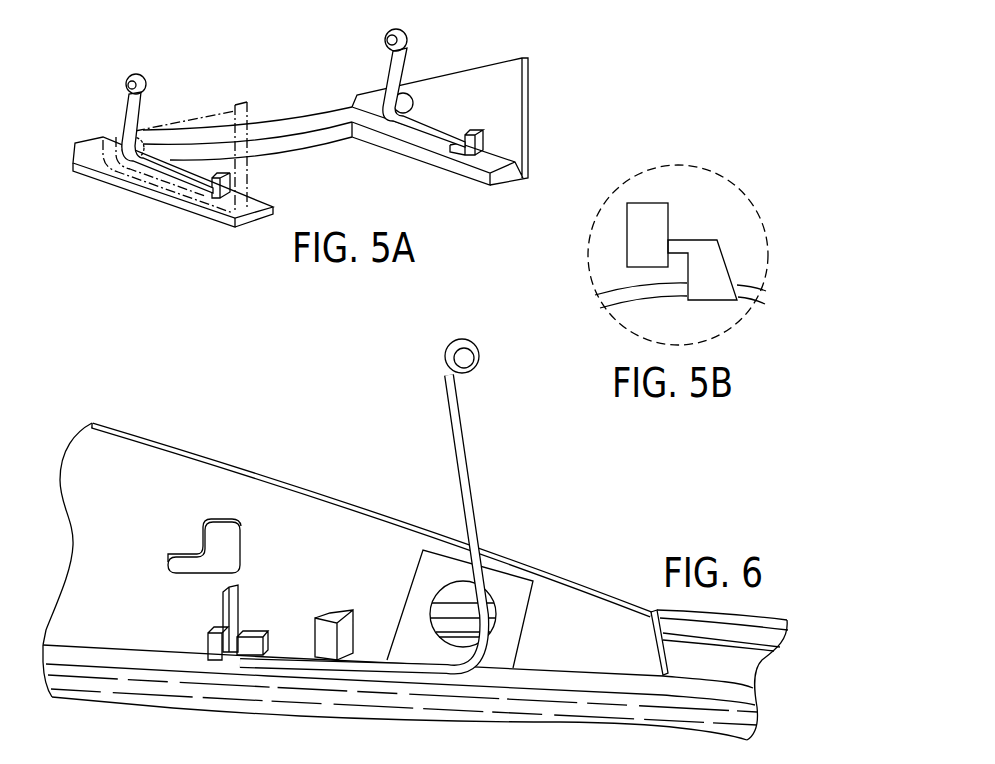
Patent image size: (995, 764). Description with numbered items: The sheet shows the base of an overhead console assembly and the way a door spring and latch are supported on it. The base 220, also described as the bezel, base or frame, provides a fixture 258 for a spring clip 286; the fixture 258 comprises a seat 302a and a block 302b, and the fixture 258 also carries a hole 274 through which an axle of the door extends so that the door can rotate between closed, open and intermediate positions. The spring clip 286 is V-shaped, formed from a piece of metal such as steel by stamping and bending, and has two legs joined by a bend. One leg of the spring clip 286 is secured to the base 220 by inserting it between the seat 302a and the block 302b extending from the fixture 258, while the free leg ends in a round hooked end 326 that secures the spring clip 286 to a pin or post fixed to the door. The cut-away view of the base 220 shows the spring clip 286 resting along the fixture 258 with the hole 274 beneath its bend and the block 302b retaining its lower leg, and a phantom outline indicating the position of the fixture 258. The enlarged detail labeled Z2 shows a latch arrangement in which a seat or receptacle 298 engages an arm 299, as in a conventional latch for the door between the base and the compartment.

In FIG. 6, the base 220 is at (144, 414).
In FIG. 5A, the fixture 258 is at (248, 111).
In FIG. 6, the fixture 258 is at (238, 474).
In FIG. 5A, the hole 274 is at (412, 102).
In FIG. 6, the hole 274 is at (447, 587).
In FIG. 5A, the spring clip 286 is at (128, 95).
In FIG. 6, the spring clip 286 is at (474, 467).
In FIG. 5B, the seat/receptacle 298 is at (670, 217).
In FIG. 5B, the arm 299 is at (727, 260).
In FIG. 6, the seat 302a is at (325, 613).
In FIG. 5A, the block 302b is at (460, 148).
In FIG. 6, the block 302b is at (264, 645).
In FIG. 6, the hooked end 326 is at (483, 346).
In FIG. 5B, the latch arrangement Z2 is at (695, 187).